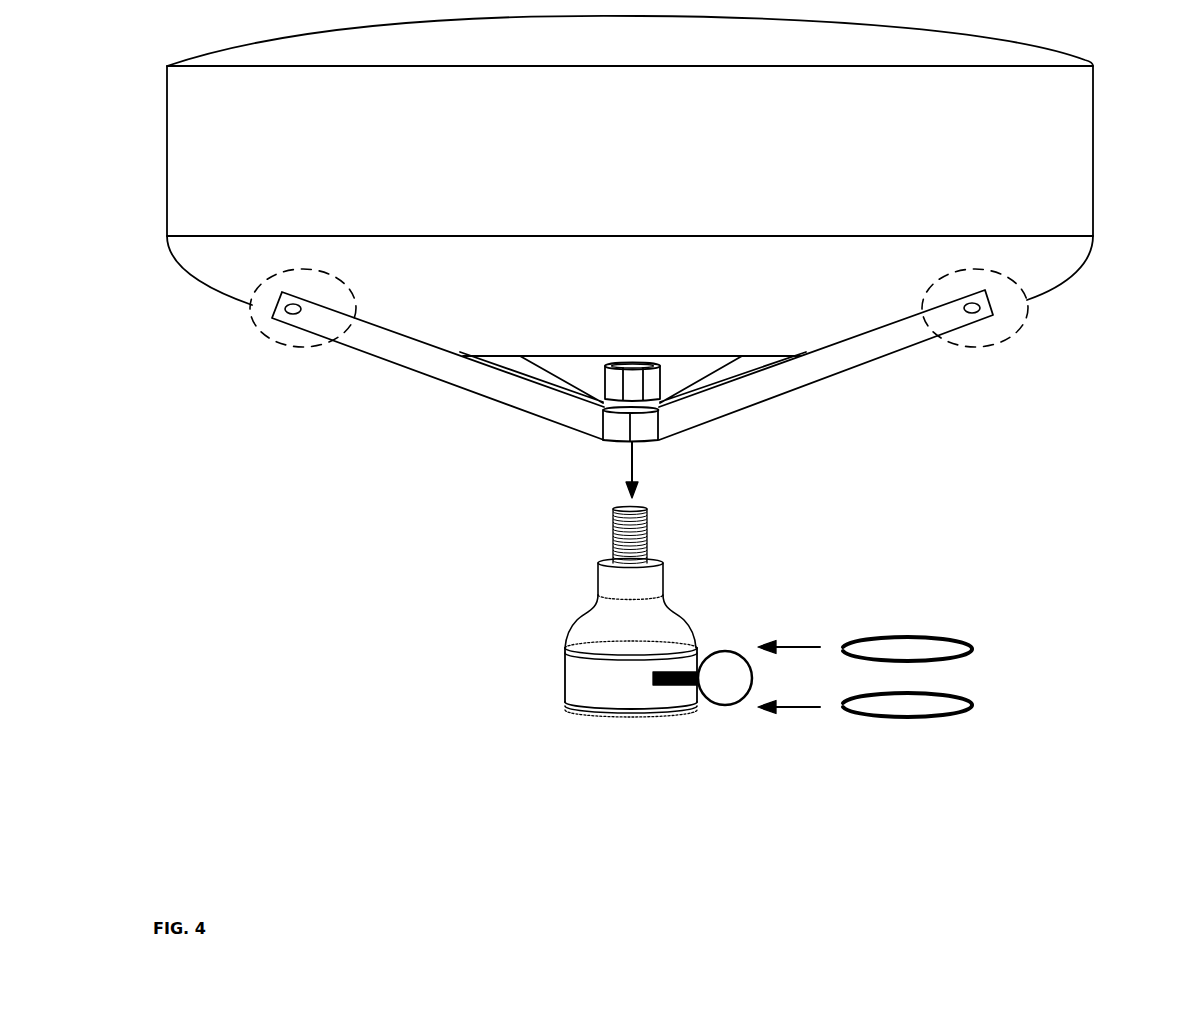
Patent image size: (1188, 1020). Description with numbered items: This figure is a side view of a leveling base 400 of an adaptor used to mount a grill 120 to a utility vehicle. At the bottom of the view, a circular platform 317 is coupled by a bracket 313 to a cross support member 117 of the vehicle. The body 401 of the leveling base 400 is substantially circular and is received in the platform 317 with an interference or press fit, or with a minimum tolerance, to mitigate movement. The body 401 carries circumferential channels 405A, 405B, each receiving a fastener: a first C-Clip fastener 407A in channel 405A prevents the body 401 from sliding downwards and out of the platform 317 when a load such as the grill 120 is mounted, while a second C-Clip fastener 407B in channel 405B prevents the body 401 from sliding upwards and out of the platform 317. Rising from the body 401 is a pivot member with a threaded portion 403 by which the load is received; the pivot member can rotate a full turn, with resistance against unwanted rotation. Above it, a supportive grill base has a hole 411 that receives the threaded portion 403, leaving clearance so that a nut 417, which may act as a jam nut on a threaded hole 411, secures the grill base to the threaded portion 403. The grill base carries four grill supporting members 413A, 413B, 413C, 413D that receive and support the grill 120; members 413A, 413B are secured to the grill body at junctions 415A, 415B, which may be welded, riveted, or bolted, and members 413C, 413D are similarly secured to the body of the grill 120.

The grill 120 is at (1078, 181).
The leveling base 400 is at (750, 782).
The body 401 is at (685, 628).
The threaded portion 403 is at (647, 550).
The circumferential channel 405A is at (578, 647).
The circumferential channel 405B is at (642, 714).
The first C-Clip fastener 407A is at (968, 647).
The second C-Clip fastener 407B is at (968, 705).
The hole 411 is at (660, 438).
The grill supporting member 413A is at (763, 397).
The grill supporting member 413B is at (522, 397).
The grill supporting member 413C is at (512, 363).
The grill supporting member 413D is at (746, 363).
The junction 415A is at (1018, 328).
The junction 415B is at (260, 333).
The nut 417 is at (632, 352).
The platform 317 is at (575, 690).
The bracket 313 is at (664, 683).
The cross support member 117 is at (752, 672).